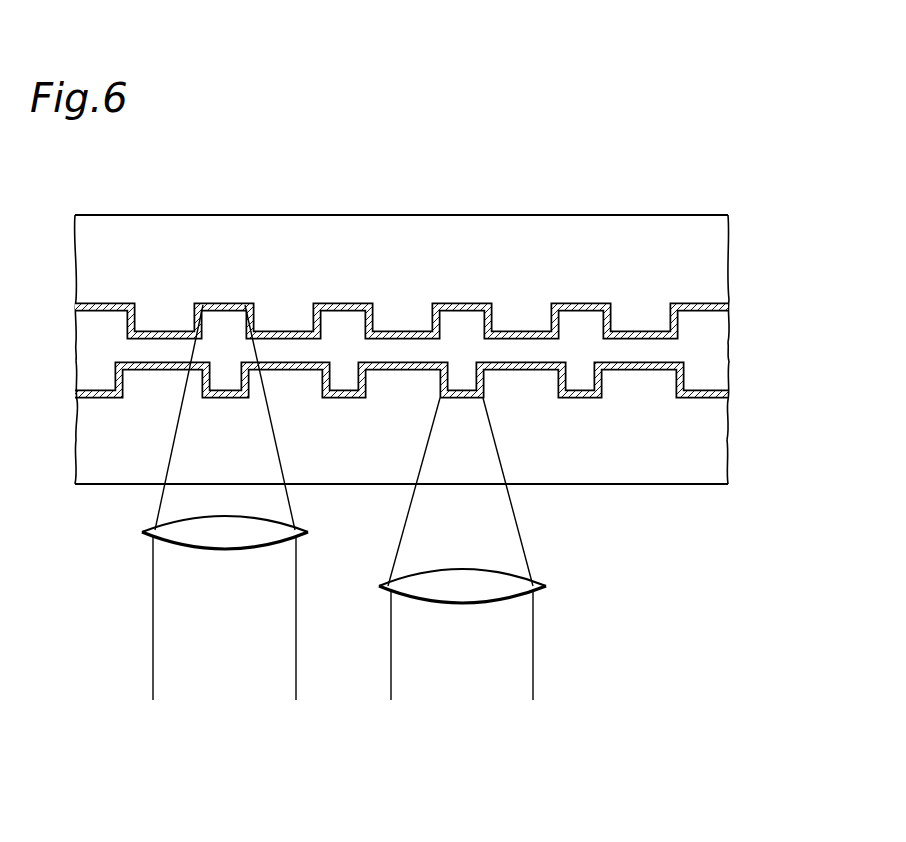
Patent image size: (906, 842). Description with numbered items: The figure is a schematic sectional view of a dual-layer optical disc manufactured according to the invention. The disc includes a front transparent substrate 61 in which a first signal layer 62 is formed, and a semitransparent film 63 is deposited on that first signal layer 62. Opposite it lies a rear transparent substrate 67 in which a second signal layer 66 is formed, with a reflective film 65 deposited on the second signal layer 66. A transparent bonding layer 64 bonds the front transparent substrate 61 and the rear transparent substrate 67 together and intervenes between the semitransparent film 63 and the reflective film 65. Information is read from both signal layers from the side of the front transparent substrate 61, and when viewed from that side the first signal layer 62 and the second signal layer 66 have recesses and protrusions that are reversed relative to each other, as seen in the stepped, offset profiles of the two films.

The front transparent substrate 61 is at (688, 460).
The first signal layer 62 is at (632, 378).
The semitransparent film 63 is at (678, 372).
The transparent bonding layer 64 is at (707, 350).
The reflective film 65 is at (700, 325).
The second signal layer 66 is at (638, 318).
The rear transparent substrate 67 is at (692, 243).